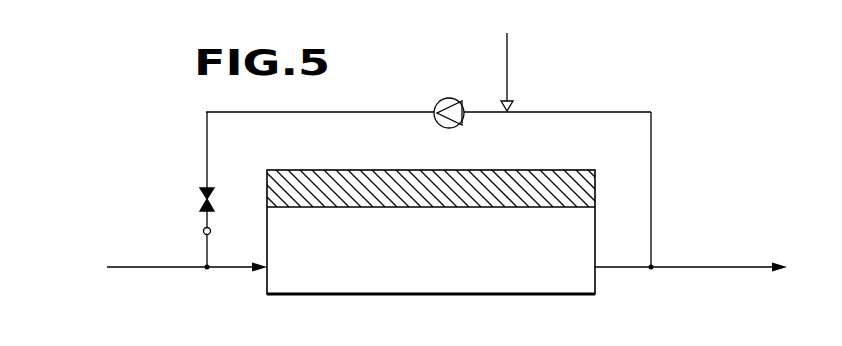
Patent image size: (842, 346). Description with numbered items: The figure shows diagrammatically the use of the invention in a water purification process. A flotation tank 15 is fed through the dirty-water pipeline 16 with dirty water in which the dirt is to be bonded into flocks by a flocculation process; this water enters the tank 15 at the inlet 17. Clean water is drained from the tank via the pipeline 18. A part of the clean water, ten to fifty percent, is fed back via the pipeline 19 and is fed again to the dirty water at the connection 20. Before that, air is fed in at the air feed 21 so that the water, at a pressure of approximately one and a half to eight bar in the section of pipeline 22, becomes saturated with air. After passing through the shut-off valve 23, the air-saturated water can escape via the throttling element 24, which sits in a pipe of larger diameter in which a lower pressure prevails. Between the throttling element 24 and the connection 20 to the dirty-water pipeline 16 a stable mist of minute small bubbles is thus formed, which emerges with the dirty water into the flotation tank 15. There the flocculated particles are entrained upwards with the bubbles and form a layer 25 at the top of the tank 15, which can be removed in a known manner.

The flotation tank 15 is at (596, 290).
The dirty-water pipeline 16 is at (148, 268).
The water inlet 17 is at (262, 268).
The clean-water pipeline 18 is at (706, 269).
The return pipeline 19 is at (652, 177).
The connection 20 is at (207, 270).
The air feed 21 is at (510, 111).
The pipeline section 22 is at (362, 111).
The shut-off valve 23 is at (203, 191).
The throttling element 24 is at (203, 232).
The layer 25 is at (562, 170).